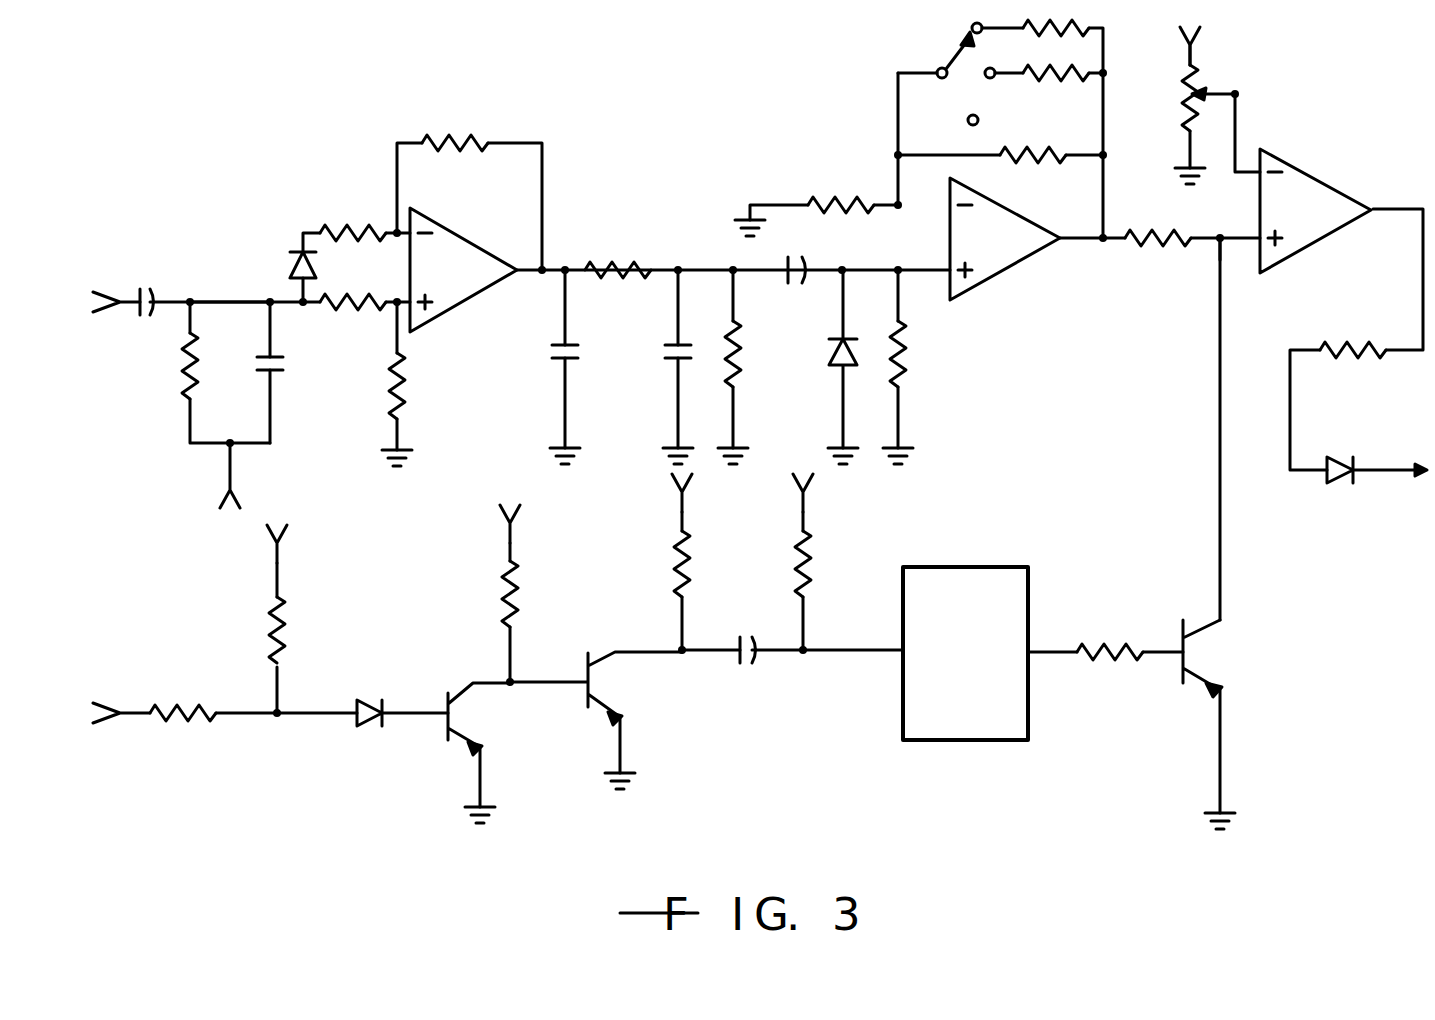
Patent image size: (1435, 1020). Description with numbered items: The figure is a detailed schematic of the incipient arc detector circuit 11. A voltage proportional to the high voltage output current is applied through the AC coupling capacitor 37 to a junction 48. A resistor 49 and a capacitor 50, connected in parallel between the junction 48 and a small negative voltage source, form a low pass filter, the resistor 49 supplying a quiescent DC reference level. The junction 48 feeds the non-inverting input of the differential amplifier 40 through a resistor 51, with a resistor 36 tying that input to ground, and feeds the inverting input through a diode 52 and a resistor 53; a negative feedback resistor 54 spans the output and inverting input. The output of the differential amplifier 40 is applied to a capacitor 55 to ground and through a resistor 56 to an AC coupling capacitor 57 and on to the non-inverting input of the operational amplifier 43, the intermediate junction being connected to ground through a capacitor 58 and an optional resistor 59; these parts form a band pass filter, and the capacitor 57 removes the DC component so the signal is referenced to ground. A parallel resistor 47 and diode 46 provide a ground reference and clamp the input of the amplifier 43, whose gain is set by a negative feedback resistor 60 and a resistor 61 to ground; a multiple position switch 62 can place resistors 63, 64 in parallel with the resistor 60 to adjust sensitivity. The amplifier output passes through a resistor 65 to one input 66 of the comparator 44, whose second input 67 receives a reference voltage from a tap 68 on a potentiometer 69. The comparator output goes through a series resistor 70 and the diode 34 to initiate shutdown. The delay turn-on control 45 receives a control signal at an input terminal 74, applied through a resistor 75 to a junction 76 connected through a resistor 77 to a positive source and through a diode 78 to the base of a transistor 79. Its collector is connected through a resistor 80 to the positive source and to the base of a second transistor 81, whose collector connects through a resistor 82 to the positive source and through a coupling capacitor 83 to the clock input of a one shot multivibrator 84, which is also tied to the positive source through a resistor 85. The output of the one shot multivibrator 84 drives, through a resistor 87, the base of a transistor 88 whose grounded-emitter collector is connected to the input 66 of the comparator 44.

The incipient arc detector circuit 11 is at (257, 98).
The diode 34 is at (1332, 481).
The resistor 36 is at (405, 399).
The AC coupling capacitor 37 is at (140, 321).
The differential amplifier 40 is at (461, 304).
The operational amplifier 43 is at (1015, 276).
The comparator 44 is at (1328, 243).
The delay turn-on control 45 is at (1060, 667).
The diode 46 is at (835, 369).
The resistor 47 is at (908, 376).
The junction 48 is at (216, 300).
The resistor 49 is at (184, 390).
The capacitor 50 is at (283, 365).
The resistor 51 is at (346, 308).
The diode 52 is at (295, 264).
The resistor 53 is at (351, 228).
The negative feedback resistor 54 is at (485, 142).
The capacitor 55 is at (557, 356).
The resistor 56 is at (625, 263).
The AC coupling capacitor 57 is at (808, 264).
The capacitor 58 is at (677, 364).
The optional resistor 59 is at (745, 362).
The negative feedback resistor 60 is at (1024, 166).
The resistor 61 is at (841, 203).
The multiple position switch 62 is at (950, 56).
The resistor 63 is at (1091, 26).
The resistor 64 is at (1040, 82).
The resistor 65 is at (1159, 250).
The comparator input 66 is at (1247, 248).
The second comparator input 67 is at (1249, 151).
The tap 68 is at (1239, 92).
The potentiometer 69 is at (1181, 99).
The series resistor 70 is at (1347, 342).
The input terminal 74 is at (103, 705).
The resistor 75 is at (182, 724).
The junction 76 is at (279, 720).
The resistor 77 is at (289, 619).
The diode 78 is at (367, 699).
The transistor 79 is at (453, 685).
The resistor 80 is at (505, 599).
The second transistor 81 is at (585, 669).
The resistor 82 is at (680, 566).
The coupling capacitor 83 is at (737, 640).
The one shot multivibrator 84 is at (983, 743).
The resistor 85 is at (819, 560).
The resistor 87 is at (1105, 668).
The transistor 88 is at (1217, 638).